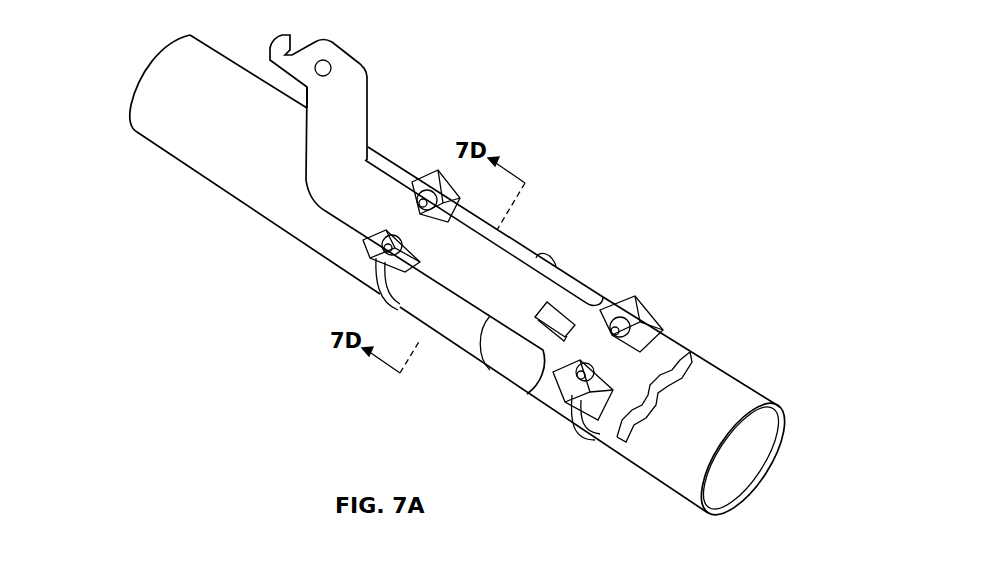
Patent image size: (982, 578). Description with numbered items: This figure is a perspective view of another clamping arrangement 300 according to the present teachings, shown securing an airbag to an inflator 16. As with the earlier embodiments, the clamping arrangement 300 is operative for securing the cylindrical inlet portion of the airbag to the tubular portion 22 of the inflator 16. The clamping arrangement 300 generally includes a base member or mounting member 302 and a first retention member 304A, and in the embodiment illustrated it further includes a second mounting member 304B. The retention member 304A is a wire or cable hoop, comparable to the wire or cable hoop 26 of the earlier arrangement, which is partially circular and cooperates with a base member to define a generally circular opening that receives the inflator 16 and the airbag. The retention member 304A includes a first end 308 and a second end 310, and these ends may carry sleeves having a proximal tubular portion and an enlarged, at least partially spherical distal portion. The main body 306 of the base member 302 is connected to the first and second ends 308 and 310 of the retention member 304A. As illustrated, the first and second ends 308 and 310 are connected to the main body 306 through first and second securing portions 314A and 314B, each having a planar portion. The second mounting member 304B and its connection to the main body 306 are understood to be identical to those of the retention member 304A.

The inflator 16 is at (762, 393).
The tubular portion 22 is at (717, 367).
The wire or cable hoop 26 is at (383, 303).
The clamping arrangement 300 is at (608, 148).
The base member or mounting member 302 is at (382, 164).
The first retention member 304A is at (577, 433).
The second mounting member 304B is at (400, 310).
The main body 306 is at (560, 300).
The first end 308 is at (623, 313).
The second end 310 is at (547, 380).
The first securing portion 314A is at (423, 173).
The second securing portion 314B is at (363, 247).